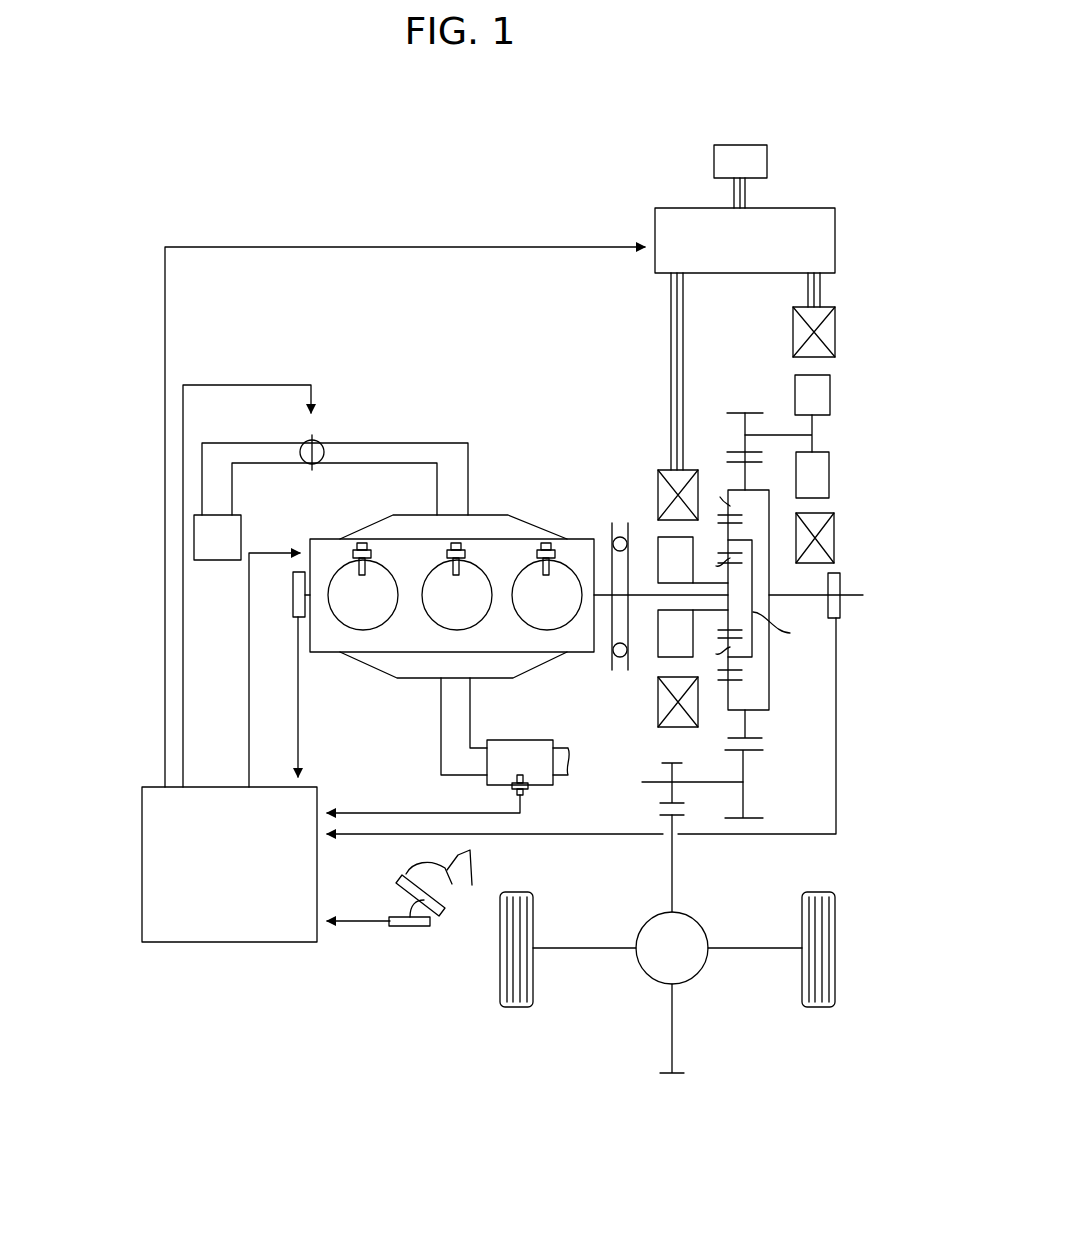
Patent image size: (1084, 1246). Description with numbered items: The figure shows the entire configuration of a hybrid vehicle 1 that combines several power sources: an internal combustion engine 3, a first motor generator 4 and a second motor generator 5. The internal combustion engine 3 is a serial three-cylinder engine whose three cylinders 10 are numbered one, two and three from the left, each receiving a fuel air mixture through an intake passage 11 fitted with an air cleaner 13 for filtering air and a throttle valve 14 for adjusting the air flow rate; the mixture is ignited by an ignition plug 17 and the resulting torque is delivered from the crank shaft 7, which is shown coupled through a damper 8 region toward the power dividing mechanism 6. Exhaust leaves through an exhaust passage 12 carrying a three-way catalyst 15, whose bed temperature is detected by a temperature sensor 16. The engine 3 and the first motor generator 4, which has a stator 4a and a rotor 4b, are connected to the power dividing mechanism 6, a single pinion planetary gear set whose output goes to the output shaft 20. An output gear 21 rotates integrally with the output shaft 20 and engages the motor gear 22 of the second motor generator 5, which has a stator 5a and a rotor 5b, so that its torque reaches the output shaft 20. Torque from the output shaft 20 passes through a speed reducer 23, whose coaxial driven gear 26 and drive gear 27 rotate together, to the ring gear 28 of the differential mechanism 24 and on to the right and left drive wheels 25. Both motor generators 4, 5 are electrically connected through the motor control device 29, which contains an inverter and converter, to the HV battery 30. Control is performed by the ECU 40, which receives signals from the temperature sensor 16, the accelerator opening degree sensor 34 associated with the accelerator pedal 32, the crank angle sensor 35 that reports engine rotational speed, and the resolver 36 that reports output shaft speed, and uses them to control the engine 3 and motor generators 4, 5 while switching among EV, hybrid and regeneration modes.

The vehicle 1 is at (439, 192).
The internal combustion engine 3 is at (449, 560).
The first motor generator 4 is at (667, 567).
The stator 4a is at (658, 510).
The rotor 4b is at (662, 657).
The second motor generator 5 is at (834, 397).
The stator 5a is at (833, 347).
The rotor 5b is at (829, 460).
The power dividing mechanism 6 is at (725, 480).
The crank shaft 7 is at (603, 588).
The damper 8 is at (609, 665).
The cylinders 10 is at (355, 622).
The intake passage 11 is at (403, 441).
The exhaust passage 12 is at (441, 722).
The air cleaner 13 is at (236, 515).
The throttle valve 14 is at (301, 445).
The three-way catalyst 15 is at (517, 748).
The temperature sensor 16 is at (528, 788).
The ignition plug 17 is at (358, 541).
The output shaft 20 is at (855, 585).
The output gear 21 is at (748, 718).
The motor gear 22 is at (740, 412).
The speed reducer 23 is at (638, 765).
The differential mechanism 24 is at (648, 922).
The drive wheels 25 is at (513, 1008).
The driven gear 26 is at (745, 767).
The drive gear 27 is at (668, 795).
The ring gear 28 is at (673, 862).
The motor control device 29 is at (660, 215).
The HV battery 30 is at (716, 162).
The accelerator pedal 32 is at (400, 882).
The accelerator opening degree sensor 34 is at (392, 915).
The crank angle sensor 35 is at (292, 598).
The resolver 36 is at (841, 606).
The ECU 40 is at (142, 846).